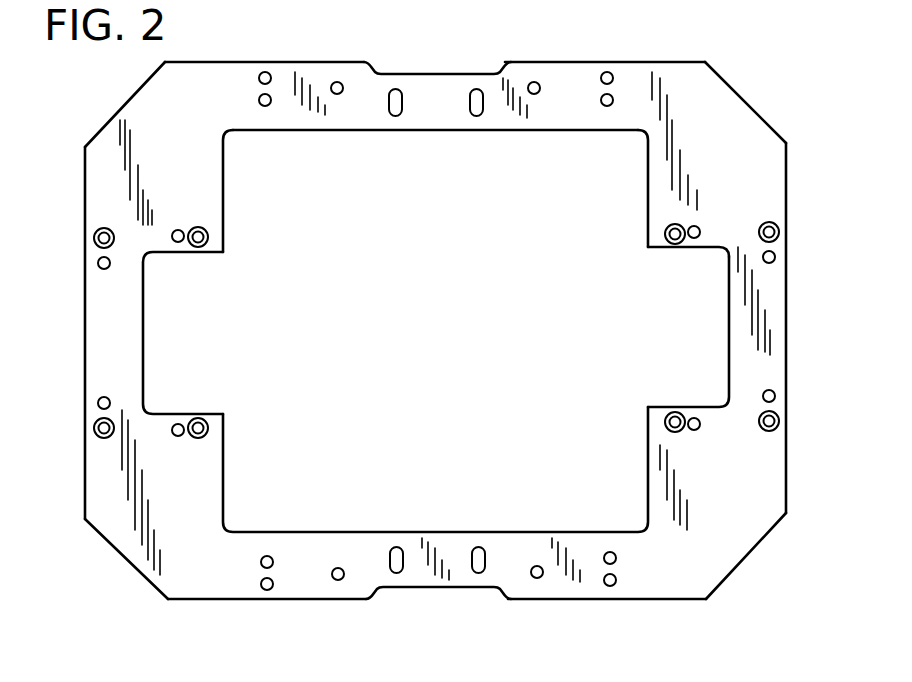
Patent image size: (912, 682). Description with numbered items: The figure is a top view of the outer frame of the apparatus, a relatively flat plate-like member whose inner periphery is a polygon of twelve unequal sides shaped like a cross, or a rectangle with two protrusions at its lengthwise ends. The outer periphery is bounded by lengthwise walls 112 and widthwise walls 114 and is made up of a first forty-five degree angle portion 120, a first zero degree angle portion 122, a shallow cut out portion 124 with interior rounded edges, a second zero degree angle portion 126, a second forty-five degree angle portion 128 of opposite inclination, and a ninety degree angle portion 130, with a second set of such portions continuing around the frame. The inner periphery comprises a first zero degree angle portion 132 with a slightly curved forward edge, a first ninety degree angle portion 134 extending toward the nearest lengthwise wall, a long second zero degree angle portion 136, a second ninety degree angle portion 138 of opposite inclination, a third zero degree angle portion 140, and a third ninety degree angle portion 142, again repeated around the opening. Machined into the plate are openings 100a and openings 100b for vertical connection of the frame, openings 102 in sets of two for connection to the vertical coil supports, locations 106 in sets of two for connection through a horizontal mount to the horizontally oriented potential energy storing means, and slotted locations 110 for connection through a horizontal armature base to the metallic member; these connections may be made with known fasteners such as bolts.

The openings 100a is at (537, 572).
The openings 100b is at (695, 420).
The openings 102 is at (765, 431).
The locations 106 is at (616, 557).
The locations 110 is at (397, 557).
The lengthwise wall 112 is at (339, 592).
The widthwise wall 114 is at (96, 484).
The first 45° angle portion 120 is at (116, 116).
The first 0° angle portion 122 is at (253, 62).
The shallow cut out portion 124 is at (430, 72).
The second 0° angle portion 126 is at (564, 61).
The second 45° angle portion 128 is at (746, 101).
The 90° angle portion 130 is at (786, 295).
The first 0° angle portion 132 is at (183, 253).
The first 90° angle portion 134 is at (225, 198).
The second 0° angle portion 136 is at (318, 131).
The second 90° angle portion 138 is at (646, 165).
The third 0° angle portion 140 is at (658, 249).
The third 90° angle portion 142 is at (728, 302).